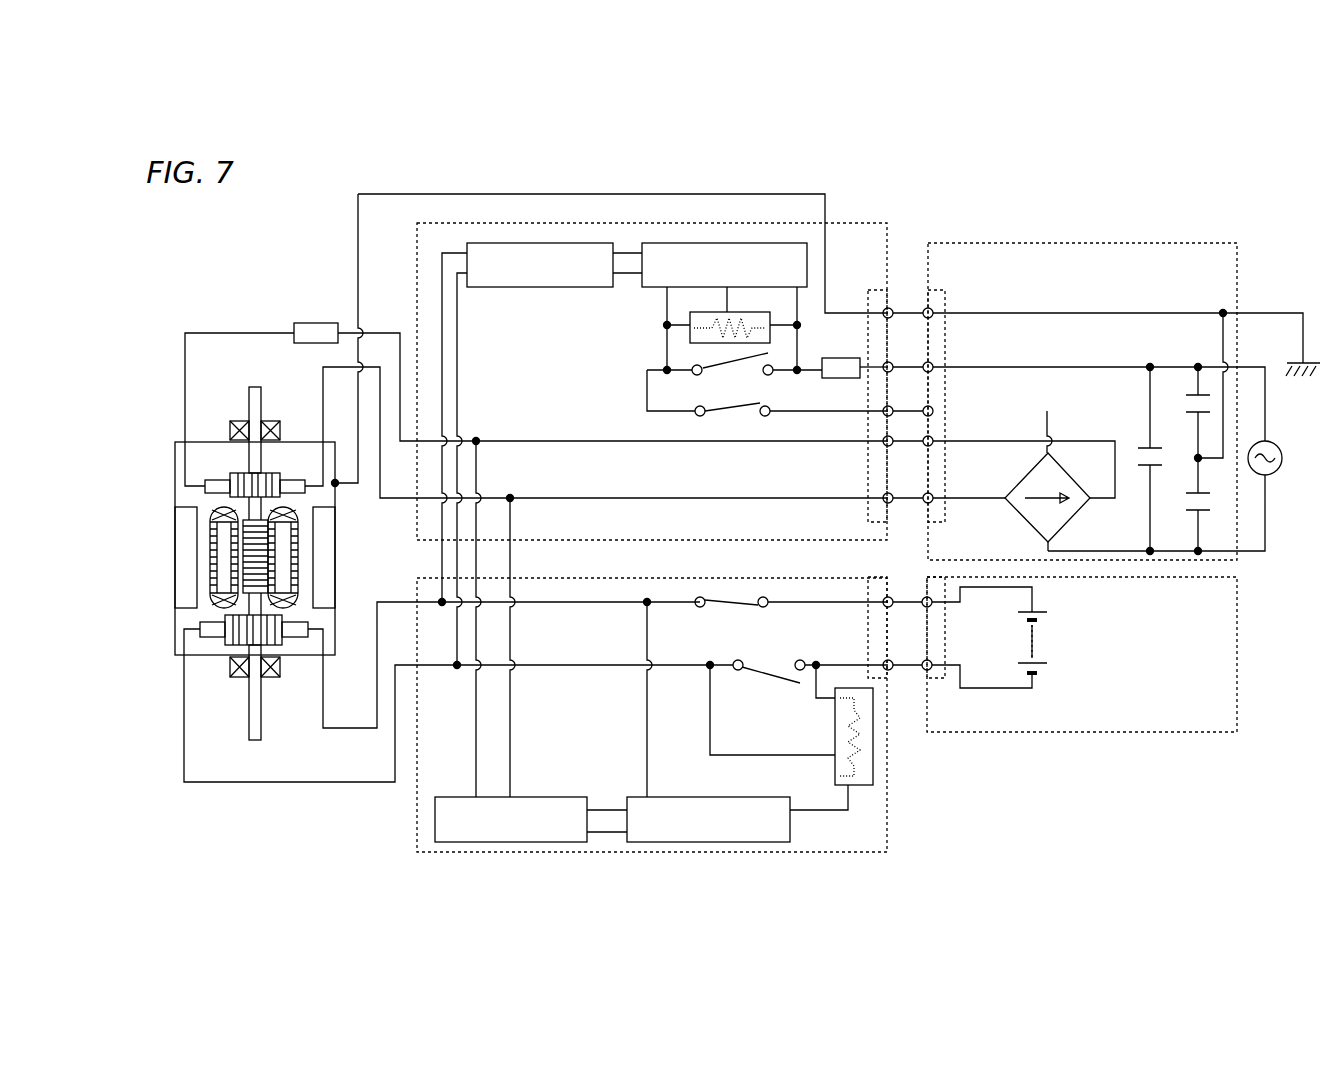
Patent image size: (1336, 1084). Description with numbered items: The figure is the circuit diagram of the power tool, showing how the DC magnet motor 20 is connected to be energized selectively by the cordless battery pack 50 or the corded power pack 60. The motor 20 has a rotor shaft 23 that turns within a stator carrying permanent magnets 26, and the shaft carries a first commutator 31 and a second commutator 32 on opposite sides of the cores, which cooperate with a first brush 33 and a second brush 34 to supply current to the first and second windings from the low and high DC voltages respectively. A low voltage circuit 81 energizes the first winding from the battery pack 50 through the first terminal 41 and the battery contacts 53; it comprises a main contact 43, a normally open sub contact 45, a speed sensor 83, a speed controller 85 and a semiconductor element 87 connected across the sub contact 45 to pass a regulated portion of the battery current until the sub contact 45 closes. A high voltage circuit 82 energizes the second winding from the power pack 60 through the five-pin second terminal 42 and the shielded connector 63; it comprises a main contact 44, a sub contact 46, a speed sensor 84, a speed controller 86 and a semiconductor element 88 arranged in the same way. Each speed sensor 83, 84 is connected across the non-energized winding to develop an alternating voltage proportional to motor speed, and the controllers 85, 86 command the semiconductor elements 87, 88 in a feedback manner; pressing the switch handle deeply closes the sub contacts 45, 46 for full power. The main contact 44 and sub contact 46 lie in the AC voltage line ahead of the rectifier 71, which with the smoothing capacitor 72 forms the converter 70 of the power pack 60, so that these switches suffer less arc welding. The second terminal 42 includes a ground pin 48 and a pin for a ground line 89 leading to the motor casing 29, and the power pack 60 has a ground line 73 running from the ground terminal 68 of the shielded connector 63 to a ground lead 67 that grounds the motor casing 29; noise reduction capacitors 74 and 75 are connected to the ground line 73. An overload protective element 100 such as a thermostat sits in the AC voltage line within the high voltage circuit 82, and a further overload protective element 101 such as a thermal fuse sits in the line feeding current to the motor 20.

The DC magnet motor 20 is at (171, 667).
The rotor shaft 23 is at (250, 404).
The permanent magnets 26 is at (185, 530).
The motor casing 29 is at (337, 495).
The first commutator 31 is at (285, 645).
The second commutator 32 is at (240, 476).
The first brush 33 is at (218, 637).
The second brush 34 is at (212, 478).
The overload protective element 101 is at (315, 322).
The high voltage circuit 82 is at (477, 222).
The ground line 89 is at (606, 193).
The speed sensor 84 is at (533, 288).
The speed controller 86 is at (653, 288).
The semiconductor element 88 is at (690, 332).
The sub contact 46 is at (742, 372).
The main contact 44 is at (732, 418).
The overload protective element 100 is at (838, 357).
The second terminal 42 is at (885, 310).
The ground pin 48 is at (930, 308).
The ground terminal 68 is at (935, 310).
The shielded connector 63 is at (948, 352).
The corded power pack 60 is at (1153, 234).
The ground line 73 is at (1104, 305).
The ground lead 67 is at (1265, 310).
The rectifier 71 is at (1073, 472).
The smoothing capacitor 72 is at (1138, 455).
The noise reduction capacitor 74 is at (1190, 398).
The noise reduction capacitor 75 is at (1190, 503).
The converter 70 is at (1085, 523).
The low voltage circuit 81 is at (440, 853).
The speed sensor 83 is at (543, 796).
The speed controller 85 is at (702, 797).
The semiconductor element 87 is at (862, 787).
The main contact 43 is at (730, 612).
The sub contact 45 is at (760, 680).
The first terminal 41 is at (847, 622).
The contacts 53 is at (945, 628).
The cordless battery pack 50 is at (1193, 740).